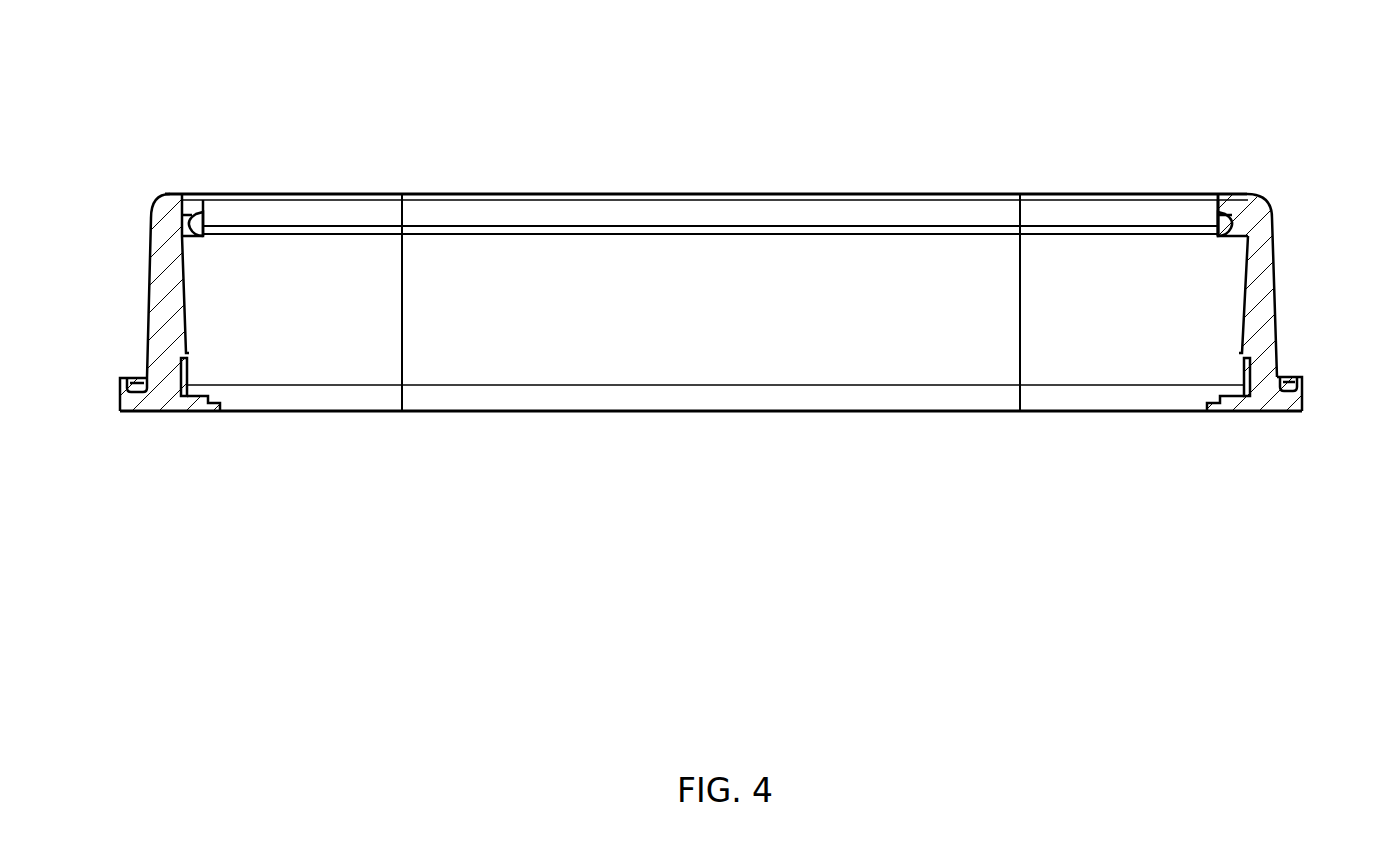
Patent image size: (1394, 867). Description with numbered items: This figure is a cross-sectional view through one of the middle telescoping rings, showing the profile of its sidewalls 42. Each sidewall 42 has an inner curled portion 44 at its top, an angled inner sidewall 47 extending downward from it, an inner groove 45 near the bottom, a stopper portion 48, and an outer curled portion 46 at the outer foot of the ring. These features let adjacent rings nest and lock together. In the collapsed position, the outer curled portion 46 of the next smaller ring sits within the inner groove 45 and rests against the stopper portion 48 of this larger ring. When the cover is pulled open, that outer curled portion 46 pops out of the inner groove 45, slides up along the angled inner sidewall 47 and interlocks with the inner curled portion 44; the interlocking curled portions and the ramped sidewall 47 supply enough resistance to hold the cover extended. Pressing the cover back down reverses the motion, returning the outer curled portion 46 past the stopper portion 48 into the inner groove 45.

The sidewall 42 is at (173, 208).
The inner curled portion 44 is at (205, 219).
The inner groove 45 is at (190, 370).
The outer curled portion 46 is at (120, 388).
The angled inner sidewall 47 is at (185, 308).
The stopper portion 48 is at (193, 412).